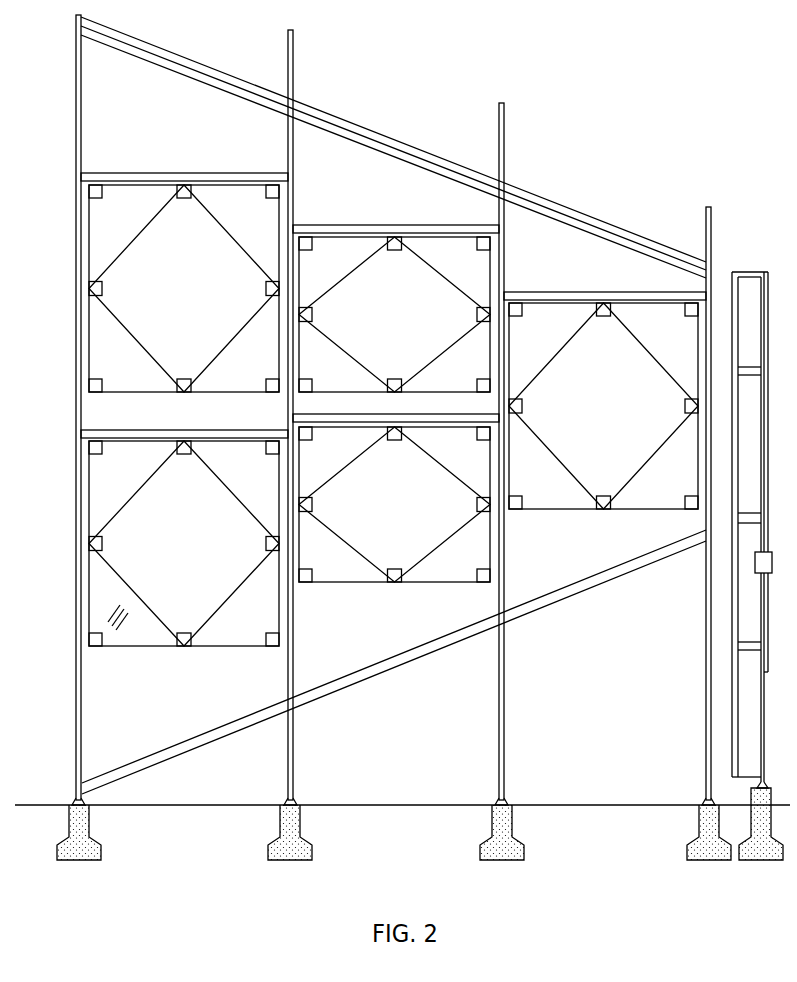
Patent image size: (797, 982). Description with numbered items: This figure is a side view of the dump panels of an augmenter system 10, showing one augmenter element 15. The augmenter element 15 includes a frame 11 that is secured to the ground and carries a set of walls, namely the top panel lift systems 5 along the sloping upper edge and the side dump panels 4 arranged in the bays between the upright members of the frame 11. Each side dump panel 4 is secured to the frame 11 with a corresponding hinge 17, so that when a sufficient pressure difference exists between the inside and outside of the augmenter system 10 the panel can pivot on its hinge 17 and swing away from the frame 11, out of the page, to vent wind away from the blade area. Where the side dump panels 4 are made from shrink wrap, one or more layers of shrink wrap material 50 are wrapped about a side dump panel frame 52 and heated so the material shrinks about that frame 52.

The augmenter system 10 is at (692, 98).
The first augmenter element 15 is at (510, 70).
The frame 11 is at (712, 220).
The top panel lift system 5 is at (390, 133).
The hinge 17 is at (116, 173).
The side dump panel 4 is at (222, 198).
The side dump panel frame 52 is at (125, 503).
The shrink wrap material 50 is at (117, 608).